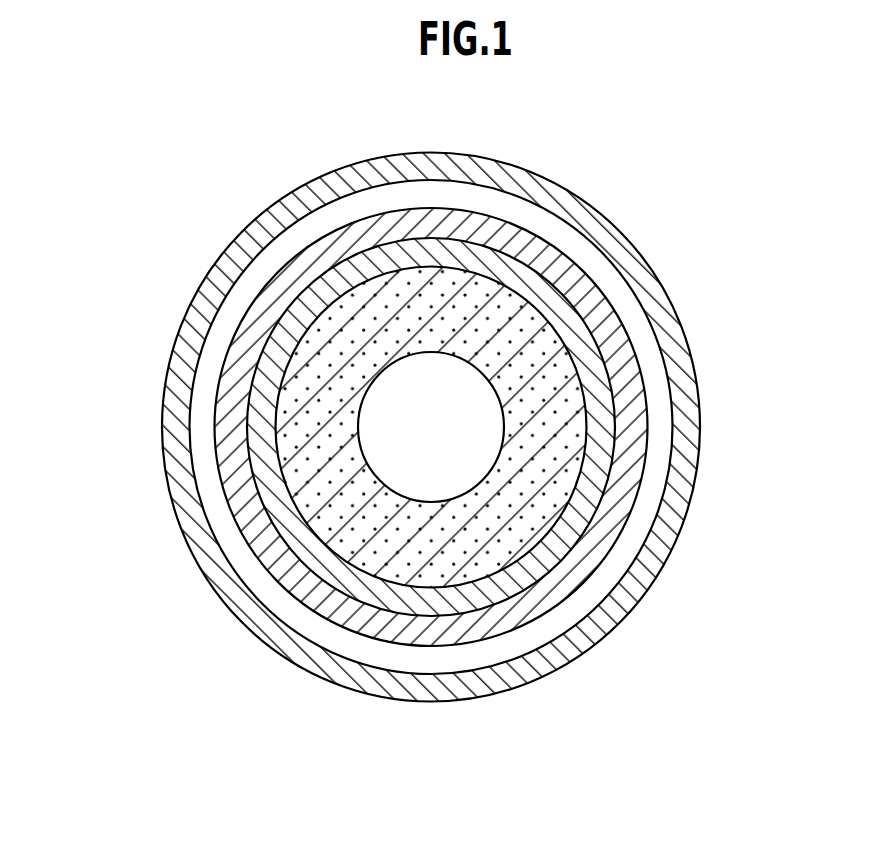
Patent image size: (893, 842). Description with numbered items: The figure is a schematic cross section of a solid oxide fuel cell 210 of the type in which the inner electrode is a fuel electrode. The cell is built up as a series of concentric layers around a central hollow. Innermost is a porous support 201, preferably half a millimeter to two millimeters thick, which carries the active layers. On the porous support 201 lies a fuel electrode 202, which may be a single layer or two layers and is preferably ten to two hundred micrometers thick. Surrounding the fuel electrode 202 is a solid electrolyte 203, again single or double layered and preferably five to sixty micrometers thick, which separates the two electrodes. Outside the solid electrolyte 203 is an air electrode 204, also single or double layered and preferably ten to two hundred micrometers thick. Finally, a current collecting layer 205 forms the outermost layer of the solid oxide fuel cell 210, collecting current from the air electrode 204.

The solid oxide fuel cell 210 is at (185, 230).
The porous support 201 is at (535, 520).
The fuel electrode 202 is at (575, 512).
The solid electrolyte 203 is at (623, 497).
The air electrode 204 is at (660, 424).
The current collecting layer 205 is at (670, 330).